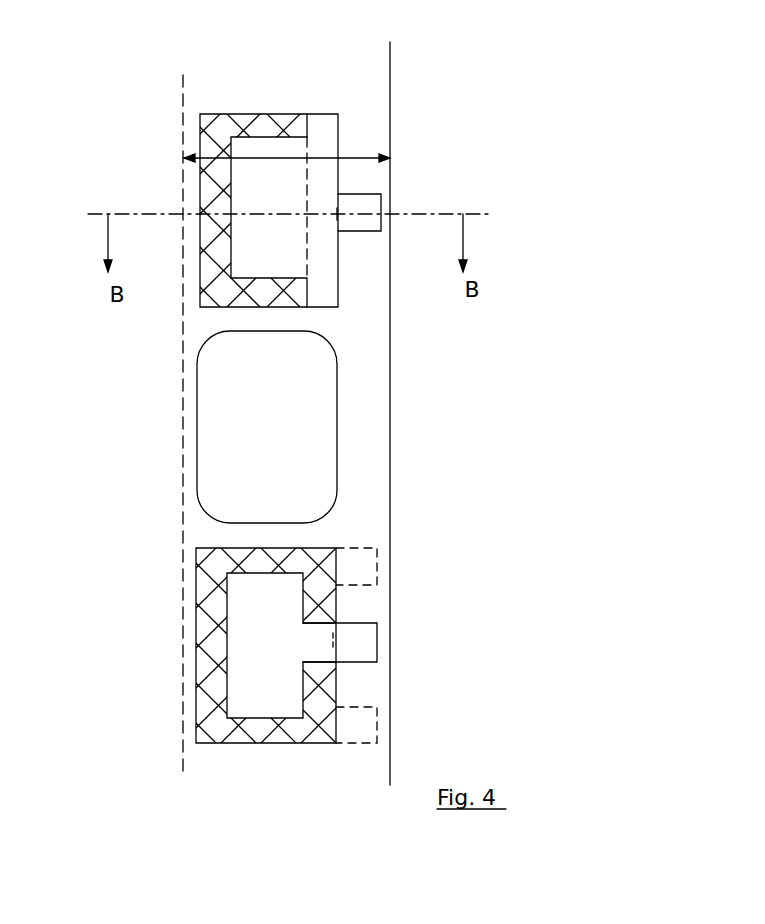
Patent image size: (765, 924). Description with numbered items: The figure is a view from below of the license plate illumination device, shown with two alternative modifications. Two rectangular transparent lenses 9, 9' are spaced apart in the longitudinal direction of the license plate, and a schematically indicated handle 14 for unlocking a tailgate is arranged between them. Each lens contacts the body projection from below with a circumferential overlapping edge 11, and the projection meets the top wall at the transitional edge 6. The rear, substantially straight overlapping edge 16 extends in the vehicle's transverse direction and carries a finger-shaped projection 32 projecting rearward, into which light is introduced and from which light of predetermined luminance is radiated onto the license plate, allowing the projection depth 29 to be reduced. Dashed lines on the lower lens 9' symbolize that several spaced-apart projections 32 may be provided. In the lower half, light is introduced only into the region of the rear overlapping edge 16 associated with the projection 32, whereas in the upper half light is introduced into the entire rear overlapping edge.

The transitional edge 6 is at (390, 466).
The transparent lens 9 is at (206, 210).
The transparent lens 9' is at (209, 645).
The circumferential overlapping edge 11 is at (262, 120).
The handle 14 is at (218, 395).
The rear overlapping edge 16 is at (323, 125).
The projection depth 29 is at (285, 157).
The finger-shaped projection 32 is at (360, 198).